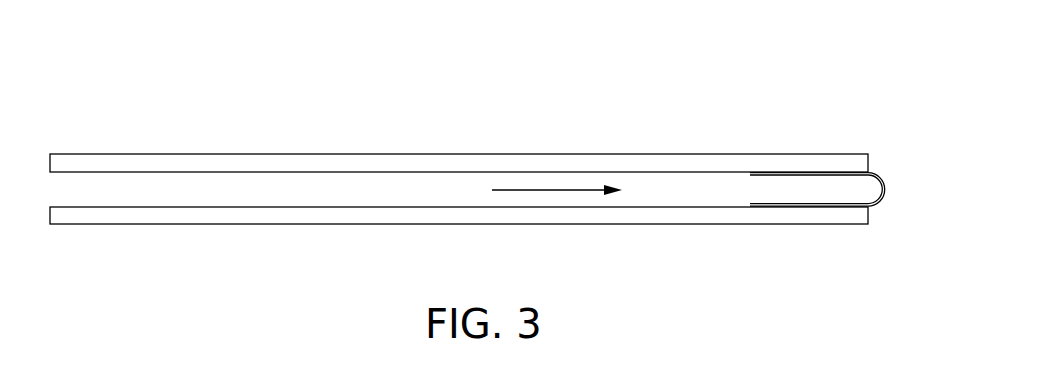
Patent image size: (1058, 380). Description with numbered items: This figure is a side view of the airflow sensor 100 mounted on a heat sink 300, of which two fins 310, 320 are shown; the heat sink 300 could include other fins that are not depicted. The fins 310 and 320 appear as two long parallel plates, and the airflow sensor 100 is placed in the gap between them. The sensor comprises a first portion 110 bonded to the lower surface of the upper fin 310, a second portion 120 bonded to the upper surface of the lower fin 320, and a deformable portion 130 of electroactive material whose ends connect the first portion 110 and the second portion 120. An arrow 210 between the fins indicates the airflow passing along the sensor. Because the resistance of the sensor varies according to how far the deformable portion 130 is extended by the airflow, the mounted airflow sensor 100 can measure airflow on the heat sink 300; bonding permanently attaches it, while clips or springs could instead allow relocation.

The airflow sensor 100 is at (854, 191).
The first portion 110 is at (796, 171).
The second portion 120 is at (810, 208).
The deformable portion 130 is at (879, 181).
The insertion direction 210 is at (537, 191).
The heat sink 300 is at (907, 68).
The fin 310 is at (368, 153).
The fin 320 is at (365, 224).